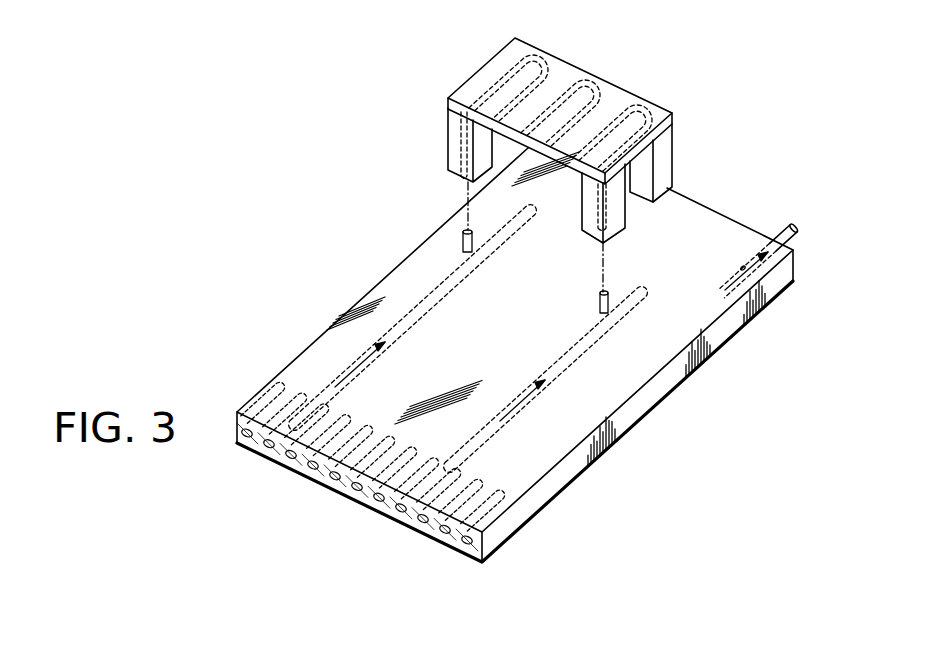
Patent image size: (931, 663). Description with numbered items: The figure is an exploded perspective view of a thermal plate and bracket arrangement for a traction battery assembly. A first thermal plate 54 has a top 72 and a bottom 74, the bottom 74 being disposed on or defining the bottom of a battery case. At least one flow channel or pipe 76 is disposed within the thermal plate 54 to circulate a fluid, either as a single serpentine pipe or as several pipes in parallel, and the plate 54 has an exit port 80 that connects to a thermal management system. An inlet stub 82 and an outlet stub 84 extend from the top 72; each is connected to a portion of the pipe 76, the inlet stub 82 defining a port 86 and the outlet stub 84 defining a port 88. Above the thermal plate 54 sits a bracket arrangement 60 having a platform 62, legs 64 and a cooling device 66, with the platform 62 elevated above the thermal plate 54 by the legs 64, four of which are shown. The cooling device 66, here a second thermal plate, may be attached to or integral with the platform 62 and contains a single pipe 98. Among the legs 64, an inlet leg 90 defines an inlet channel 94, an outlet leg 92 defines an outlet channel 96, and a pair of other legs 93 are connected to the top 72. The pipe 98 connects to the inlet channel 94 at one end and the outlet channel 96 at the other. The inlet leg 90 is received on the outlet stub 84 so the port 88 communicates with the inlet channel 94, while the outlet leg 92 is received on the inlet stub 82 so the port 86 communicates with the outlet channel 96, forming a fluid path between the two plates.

The first thermal plate 54 is at (305, 353).
The bracket arrangement 60 is at (673, 25).
The platform 62 is at (663, 107).
The legs 64 is at (667, 163).
The cooling device 66 is at (563, 67).
The top 72 is at (383, 295).
The bottom 74 is at (630, 430).
The flow channel or pipe 76 is at (265, 447).
The exit port 80 is at (793, 230).
The inlet stub 82 is at (610, 298).
The outlet stub 84 is at (463, 242).
The port 86 is at (598, 293).
The port 88 is at (468, 231).
The inlet leg 90 is at (453, 133).
The outlet leg 92 is at (620, 200).
The other legs 93 is at (667, 152).
The inlet channel 94 is at (448, 150).
The outlet channel 96 is at (583, 227).
The single pipe 98 is at (502, 66).